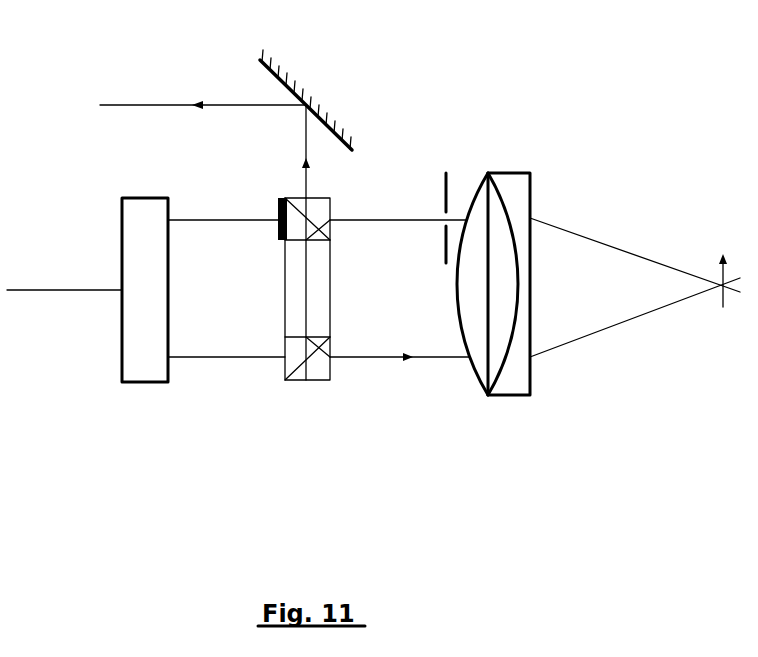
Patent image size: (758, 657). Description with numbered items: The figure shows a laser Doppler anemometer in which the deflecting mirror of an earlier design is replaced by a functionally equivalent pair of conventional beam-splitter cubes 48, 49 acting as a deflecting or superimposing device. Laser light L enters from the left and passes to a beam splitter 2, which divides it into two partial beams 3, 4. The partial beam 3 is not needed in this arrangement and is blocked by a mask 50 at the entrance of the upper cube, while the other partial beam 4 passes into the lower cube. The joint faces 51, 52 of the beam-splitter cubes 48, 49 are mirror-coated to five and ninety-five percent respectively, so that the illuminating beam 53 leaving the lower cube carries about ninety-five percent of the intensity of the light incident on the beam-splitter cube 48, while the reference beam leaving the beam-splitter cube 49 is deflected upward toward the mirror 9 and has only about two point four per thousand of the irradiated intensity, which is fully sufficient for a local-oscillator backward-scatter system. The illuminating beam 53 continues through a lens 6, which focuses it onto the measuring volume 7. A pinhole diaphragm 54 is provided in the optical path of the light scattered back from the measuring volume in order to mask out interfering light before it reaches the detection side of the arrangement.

The laser input beam L is at (64, 309).
The beam splitter 2 is at (152, 383).
The partial beam 3 is at (226, 207).
The lower partial beam 4 is at (226, 377).
The beam-splitter cube 48 is at (326, 297).
The beam-splitter cube 49 is at (288, 151).
The mask 50 is at (282, 207).
The joint face 51 is at (330, 360).
The joint face 52 is at (333, 217).
The illuminating beam 53 is at (437, 361).
The pinhole diaphragm 54 is at (448, 200).
The lens 6 is at (510, 397).
The focal point / target 7 is at (635, 287).
The mirror 9 is at (226, 82).